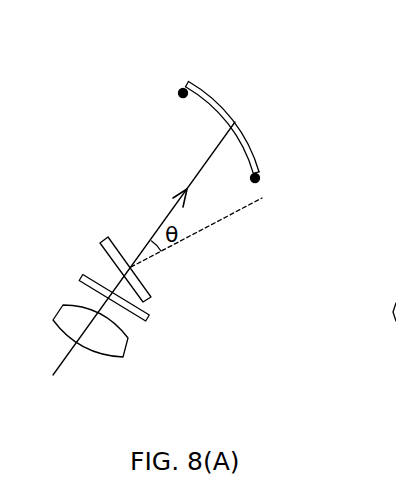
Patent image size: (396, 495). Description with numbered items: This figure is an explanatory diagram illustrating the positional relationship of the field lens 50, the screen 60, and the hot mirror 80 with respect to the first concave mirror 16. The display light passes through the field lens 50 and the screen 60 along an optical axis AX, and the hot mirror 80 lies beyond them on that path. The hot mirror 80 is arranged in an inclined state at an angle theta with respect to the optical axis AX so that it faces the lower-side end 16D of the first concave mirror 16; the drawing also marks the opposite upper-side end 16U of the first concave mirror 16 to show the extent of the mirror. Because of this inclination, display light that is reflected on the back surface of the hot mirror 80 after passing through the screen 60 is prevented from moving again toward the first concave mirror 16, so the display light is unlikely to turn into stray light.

The first concave mirror 16 is at (238, 120).
The upper end position of mirror 16U is at (181, 90).
The lower-side end of the first concave mirror 16D is at (258, 180).
The optical axis AX is at (168, 209).
The hot mirror 80 is at (153, 302).
The screen 60 is at (147, 319).
The field lens 50 is at (122, 349).